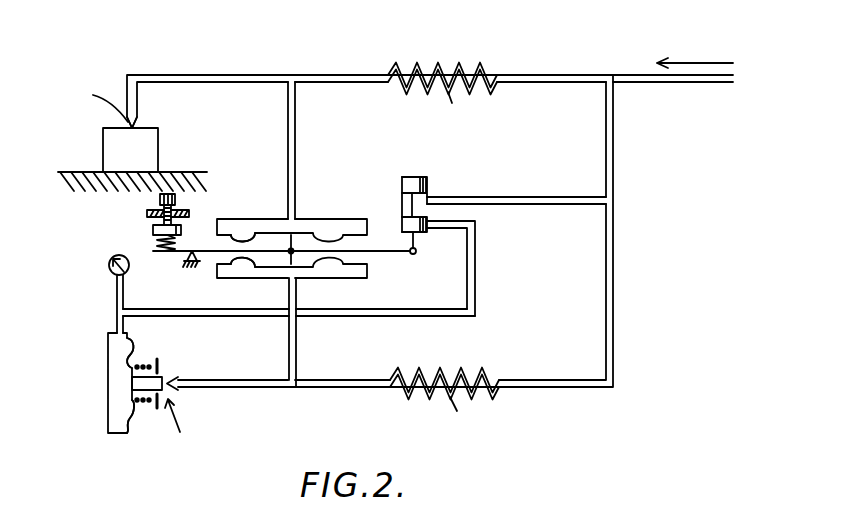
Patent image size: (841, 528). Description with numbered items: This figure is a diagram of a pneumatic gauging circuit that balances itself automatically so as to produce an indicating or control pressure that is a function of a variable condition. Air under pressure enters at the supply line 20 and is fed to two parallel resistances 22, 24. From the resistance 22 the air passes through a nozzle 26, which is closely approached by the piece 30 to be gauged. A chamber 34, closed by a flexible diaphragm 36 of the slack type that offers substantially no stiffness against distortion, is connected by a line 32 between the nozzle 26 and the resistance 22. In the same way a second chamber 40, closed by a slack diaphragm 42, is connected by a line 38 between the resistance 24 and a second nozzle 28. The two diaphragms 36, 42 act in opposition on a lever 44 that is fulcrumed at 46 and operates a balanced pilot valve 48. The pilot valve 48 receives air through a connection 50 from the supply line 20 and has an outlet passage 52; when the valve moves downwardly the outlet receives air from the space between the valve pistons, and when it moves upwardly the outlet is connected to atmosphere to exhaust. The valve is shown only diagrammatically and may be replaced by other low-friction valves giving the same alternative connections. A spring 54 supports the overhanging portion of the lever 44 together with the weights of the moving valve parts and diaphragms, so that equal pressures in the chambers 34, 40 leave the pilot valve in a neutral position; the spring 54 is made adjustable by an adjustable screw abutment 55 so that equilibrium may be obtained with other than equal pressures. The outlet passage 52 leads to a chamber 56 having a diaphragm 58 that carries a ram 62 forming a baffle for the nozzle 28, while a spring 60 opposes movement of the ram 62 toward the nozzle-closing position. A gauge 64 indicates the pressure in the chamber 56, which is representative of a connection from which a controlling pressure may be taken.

The supply line 20 is at (656, 83).
The resistance 22 is at (439, 66).
The resistance 24 is at (446, 374).
The nozzle 26 is at (137, 122).
The nozzle 28 is at (171, 392).
The piece to be gauged 30 is at (103, 147).
The line 32 is at (295, 150).
The chamber 34 is at (333, 222).
The flexible diaphragm 36 is at (250, 240).
The line 38 is at (297, 350).
The second chamber 40 is at (347, 278).
The slack diaphragm 42 is at (240, 270).
The lever 44 is at (388, 253).
The fulcrum 46 is at (190, 256).
The balanced pilot valve 48 is at (437, 188).
The connection 50 is at (518, 196).
The outlet passage 52 is at (477, 262).
The spring 54 is at (158, 246).
The adjustable screw abutment 55 is at (183, 232).
The chamber 56 is at (108, 370).
The diaphragm 58 is at (136, 355).
The spring 60 is at (151, 408).
The ram 62 is at (161, 376).
The gauge 64 is at (108, 265).